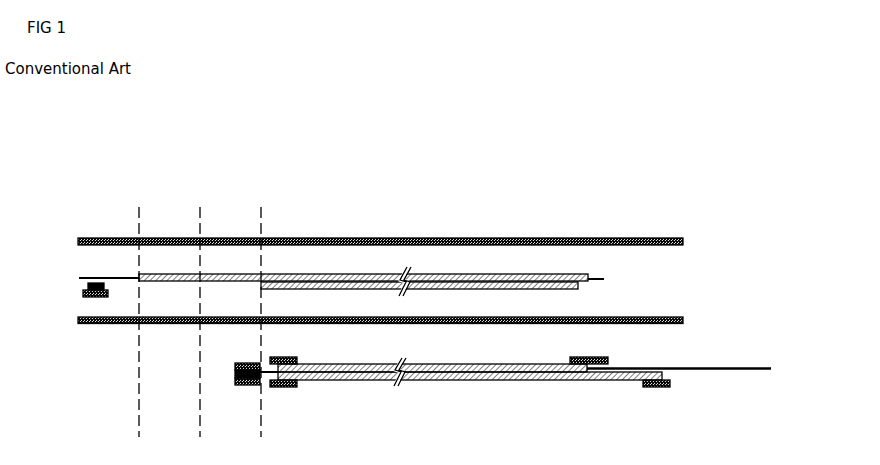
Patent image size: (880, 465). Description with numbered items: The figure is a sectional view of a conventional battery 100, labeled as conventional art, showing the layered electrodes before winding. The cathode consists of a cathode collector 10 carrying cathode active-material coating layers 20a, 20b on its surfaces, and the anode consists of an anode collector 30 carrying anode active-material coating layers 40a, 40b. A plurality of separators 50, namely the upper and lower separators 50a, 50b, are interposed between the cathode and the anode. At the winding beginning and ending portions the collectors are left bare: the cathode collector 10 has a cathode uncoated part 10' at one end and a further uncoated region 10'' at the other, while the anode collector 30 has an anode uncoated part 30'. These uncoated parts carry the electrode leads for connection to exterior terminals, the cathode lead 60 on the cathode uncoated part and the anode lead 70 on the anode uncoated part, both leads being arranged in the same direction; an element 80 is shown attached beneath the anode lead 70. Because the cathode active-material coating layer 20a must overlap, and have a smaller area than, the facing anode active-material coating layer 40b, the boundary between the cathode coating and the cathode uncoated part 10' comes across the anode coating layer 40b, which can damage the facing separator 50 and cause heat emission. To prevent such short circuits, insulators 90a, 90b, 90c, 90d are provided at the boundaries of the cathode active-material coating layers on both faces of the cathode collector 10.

The touch screen panel (conventional art) 100 is at (589, 170).
The cathode collector 10 is at (704, 356).
The cathode uncoated part 10' is at (716, 403).
The film edge region 10'' is at (253, 342).
The cathode active-material coating layer 20a is at (358, 381).
The cathode active-material coating layer 20b is at (482, 381).
The anode collector 30 is at (371, 241).
The anode uncoated part 30' is at (343, 280).
The anode active-material coating layer 40a is at (482, 274).
The anode active-material coating layer 40b is at (362, 274).
The separator 50 is at (437, 275).
The separator 50a is at (683, 241).
The separator 50b is at (417, 313).
The cathode lead 60 is at (235, 373).
The anode lead 70 is at (84, 284).
The flexible printed circuit 80 is at (80, 296).
The insulator 90a is at (284, 357).
The insulator 90b is at (285, 388).
The insulator 90c is at (598, 365).
The insulator 90d is at (651, 388).